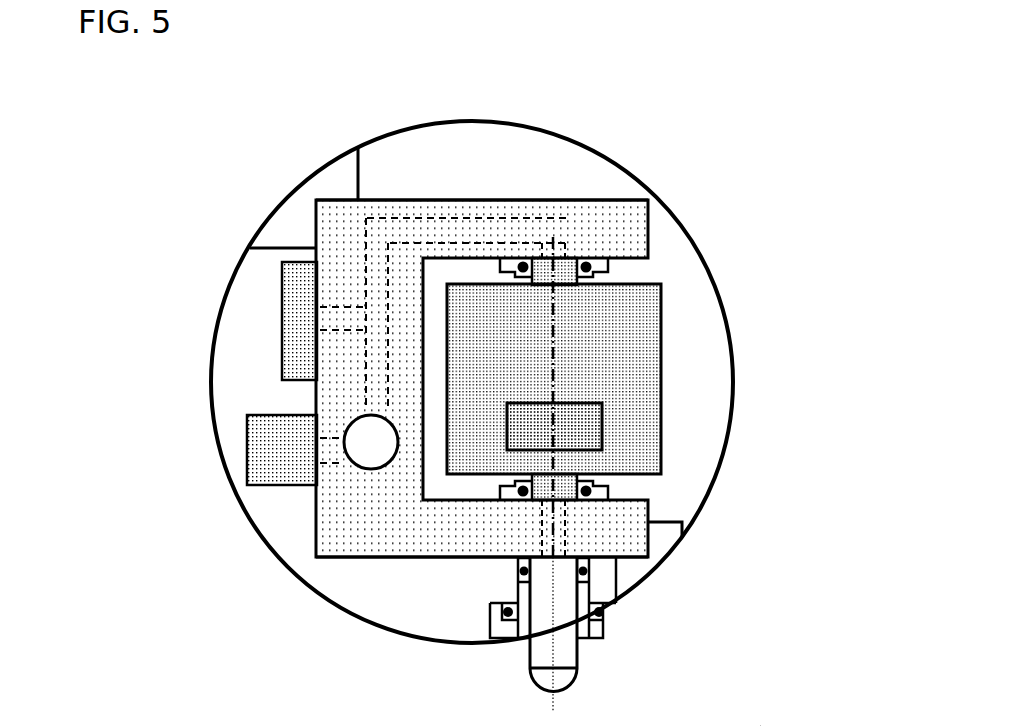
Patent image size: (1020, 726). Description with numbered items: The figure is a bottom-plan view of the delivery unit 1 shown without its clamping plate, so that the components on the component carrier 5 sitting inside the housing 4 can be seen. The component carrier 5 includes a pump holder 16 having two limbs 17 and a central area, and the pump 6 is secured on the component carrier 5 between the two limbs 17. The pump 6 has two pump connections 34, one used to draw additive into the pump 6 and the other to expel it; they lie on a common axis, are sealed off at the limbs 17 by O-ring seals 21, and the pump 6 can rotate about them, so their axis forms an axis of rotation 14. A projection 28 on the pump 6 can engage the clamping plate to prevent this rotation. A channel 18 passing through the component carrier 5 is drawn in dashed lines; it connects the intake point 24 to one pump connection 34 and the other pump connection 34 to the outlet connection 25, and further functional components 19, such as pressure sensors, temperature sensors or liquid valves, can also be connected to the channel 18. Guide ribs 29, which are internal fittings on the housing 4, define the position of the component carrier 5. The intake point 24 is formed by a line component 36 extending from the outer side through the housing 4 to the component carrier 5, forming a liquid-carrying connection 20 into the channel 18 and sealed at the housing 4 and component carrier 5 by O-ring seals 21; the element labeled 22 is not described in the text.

The delivery unit 1 is at (151, 154).
The housing 4 is at (553, 132).
The component carrier 5 is at (543, 203).
The pump 6 is at (653, 283).
The axis of rotation 14 is at (553, 340).
The pump holder 16 is at (318, 403).
The limbs 17 is at (457, 203).
The channel 18 is at (402, 218).
The further functional components 19 is at (282, 287).
The liquid-carrying connection 20 is at (555, 703).
The O-ring seals 21 is at (585, 260).
The coupling 22 is at (770, 725).
The intake point 24 is at (577, 668).
The outlet connection 25 is at (370, 468).
The projection 28 is at (602, 403).
The guide ribs 29 is at (280, 246).
The pump connections 34 is at (573, 257).
The line component 36 is at (500, 637).